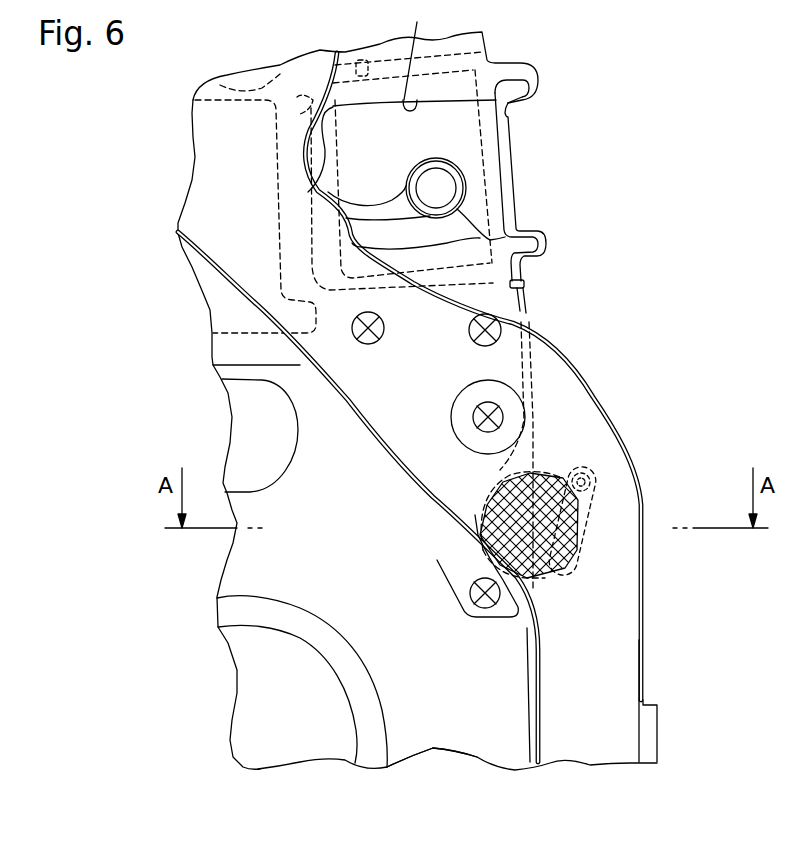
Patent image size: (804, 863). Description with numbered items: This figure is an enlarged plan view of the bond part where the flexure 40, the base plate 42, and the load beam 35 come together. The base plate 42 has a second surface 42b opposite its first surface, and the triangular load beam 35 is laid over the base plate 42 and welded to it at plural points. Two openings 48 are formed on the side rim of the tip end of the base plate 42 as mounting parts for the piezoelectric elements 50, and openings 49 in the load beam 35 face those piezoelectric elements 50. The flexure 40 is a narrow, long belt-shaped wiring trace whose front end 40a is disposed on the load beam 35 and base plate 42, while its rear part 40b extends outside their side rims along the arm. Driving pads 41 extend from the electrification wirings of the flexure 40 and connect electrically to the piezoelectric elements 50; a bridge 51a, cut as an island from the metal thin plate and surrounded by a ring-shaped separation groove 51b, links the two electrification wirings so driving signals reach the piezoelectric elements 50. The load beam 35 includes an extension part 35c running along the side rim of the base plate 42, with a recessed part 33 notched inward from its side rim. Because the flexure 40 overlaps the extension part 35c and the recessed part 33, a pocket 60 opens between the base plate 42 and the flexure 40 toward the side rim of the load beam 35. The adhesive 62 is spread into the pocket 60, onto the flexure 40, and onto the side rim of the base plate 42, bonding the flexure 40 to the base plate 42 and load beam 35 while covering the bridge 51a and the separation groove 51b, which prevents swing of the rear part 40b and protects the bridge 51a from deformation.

The recessed part 33 is at (503, 473).
The load beam 35 is at (497, 297).
The extension part 35c is at (450, 558).
The flexure 40 is at (592, 358).
The front end 40a is at (257, 298).
The rear part 40b is at (618, 672).
The driving pad 41 is at (448, 187).
The base plate 42 is at (420, 740).
The second surface 42b is at (473, 740).
The opening 48 is at (361, 50).
The opening 49 is at (417, 55).
The piezoelectric element 50 is at (467, 132).
The bridge 51a is at (598, 494).
The separation groove 51b is at (594, 474).
The pocket 60 is at (533, 466).
The adhesive 62 is at (563, 533).